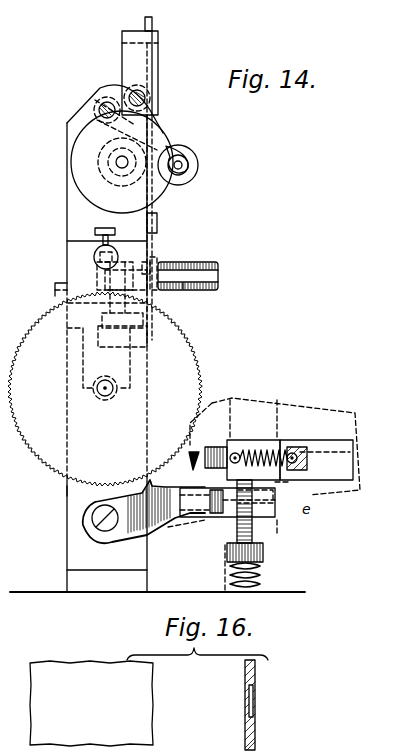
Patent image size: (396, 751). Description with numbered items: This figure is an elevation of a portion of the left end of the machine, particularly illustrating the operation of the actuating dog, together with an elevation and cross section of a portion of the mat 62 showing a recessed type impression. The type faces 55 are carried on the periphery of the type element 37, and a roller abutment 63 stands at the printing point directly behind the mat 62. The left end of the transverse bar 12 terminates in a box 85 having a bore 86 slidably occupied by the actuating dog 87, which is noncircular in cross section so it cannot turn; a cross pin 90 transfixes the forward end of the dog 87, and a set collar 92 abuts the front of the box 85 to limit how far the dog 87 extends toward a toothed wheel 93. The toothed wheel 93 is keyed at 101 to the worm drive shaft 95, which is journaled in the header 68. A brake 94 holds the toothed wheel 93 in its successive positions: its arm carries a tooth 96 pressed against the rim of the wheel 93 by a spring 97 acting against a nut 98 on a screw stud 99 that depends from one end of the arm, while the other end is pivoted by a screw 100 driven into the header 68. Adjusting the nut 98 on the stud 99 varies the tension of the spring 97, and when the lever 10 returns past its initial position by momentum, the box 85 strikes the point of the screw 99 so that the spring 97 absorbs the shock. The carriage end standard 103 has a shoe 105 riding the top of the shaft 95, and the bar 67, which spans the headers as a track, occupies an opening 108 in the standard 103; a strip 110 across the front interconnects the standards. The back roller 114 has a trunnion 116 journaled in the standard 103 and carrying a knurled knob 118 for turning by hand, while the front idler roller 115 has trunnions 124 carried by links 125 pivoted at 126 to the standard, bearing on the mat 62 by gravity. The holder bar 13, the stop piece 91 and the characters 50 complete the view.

In FIG. 14, the lever 10 is at (336, 438).
In FIG. 14, the transverse bar 12 is at (286, 491).
In FIG. 14, the holder bar 13 is at (338, 473).
In FIG. 14, the type element 37 is at (205, 262).
In FIG. 16, the type characters 50 is at (125, 691).
In FIG. 14, the type faces 55 is at (183, 287).
In FIG. 16, the mat 62 is at (52, 663).
In FIG. 14, the roller abutment 63 is at (152, 265).
In FIG. 14, the bar 67 is at (72, 288).
In FIG. 14, the header 68 is at (68, 490).
In FIG. 14, the box 85 is at (237, 440).
In FIG. 14, the bore 86 is at (258, 449).
In FIG. 14, the actuating dog 87 is at (196, 465).
In FIG. 14, the cross pin 90 is at (297, 449).
In FIG. 14, the plunger pin 91 is at (281, 440).
In FIG. 14, the set collar 92 is at (212, 449).
In FIG. 14, the toothed wheel 93 is at (167, 345).
In FIG. 14, the brake 94 is at (163, 520).
In FIG. 14, the worm drive shaft 95 is at (101, 394).
In FIG. 14, the tooth 96 is at (147, 481).
In FIG. 14, the spring 97 is at (262, 577).
In FIG. 14, the nut 98 is at (217, 508).
In FIG. 14, the screw stud 99 is at (253, 538).
In FIG. 14, the screw 100 is at (99, 526).
In FIG. 14, the key 101 is at (106, 380).
In FIG. 14, the end standard 103 is at (73, 215).
In FIG. 14, the shoe 105 is at (108, 252).
In FIG. 14, the openings 108 is at (76, 284).
In FIG. 14, the strip 110 is at (158, 222).
In FIG. 14, the back roller 114 is at (97, 155).
In FIG. 14, the front roller 115 is at (192, 151).
In FIG. 14, the trunnion 116 is at (117, 165).
In FIG. 14, the knurled knob 118 is at (73, 195).
In FIG. 14, the trunnions 124 is at (183, 165).
In FIG. 14, the links 125 is at (170, 147).
In FIG. 14, the pivot 126 is at (103, 105).